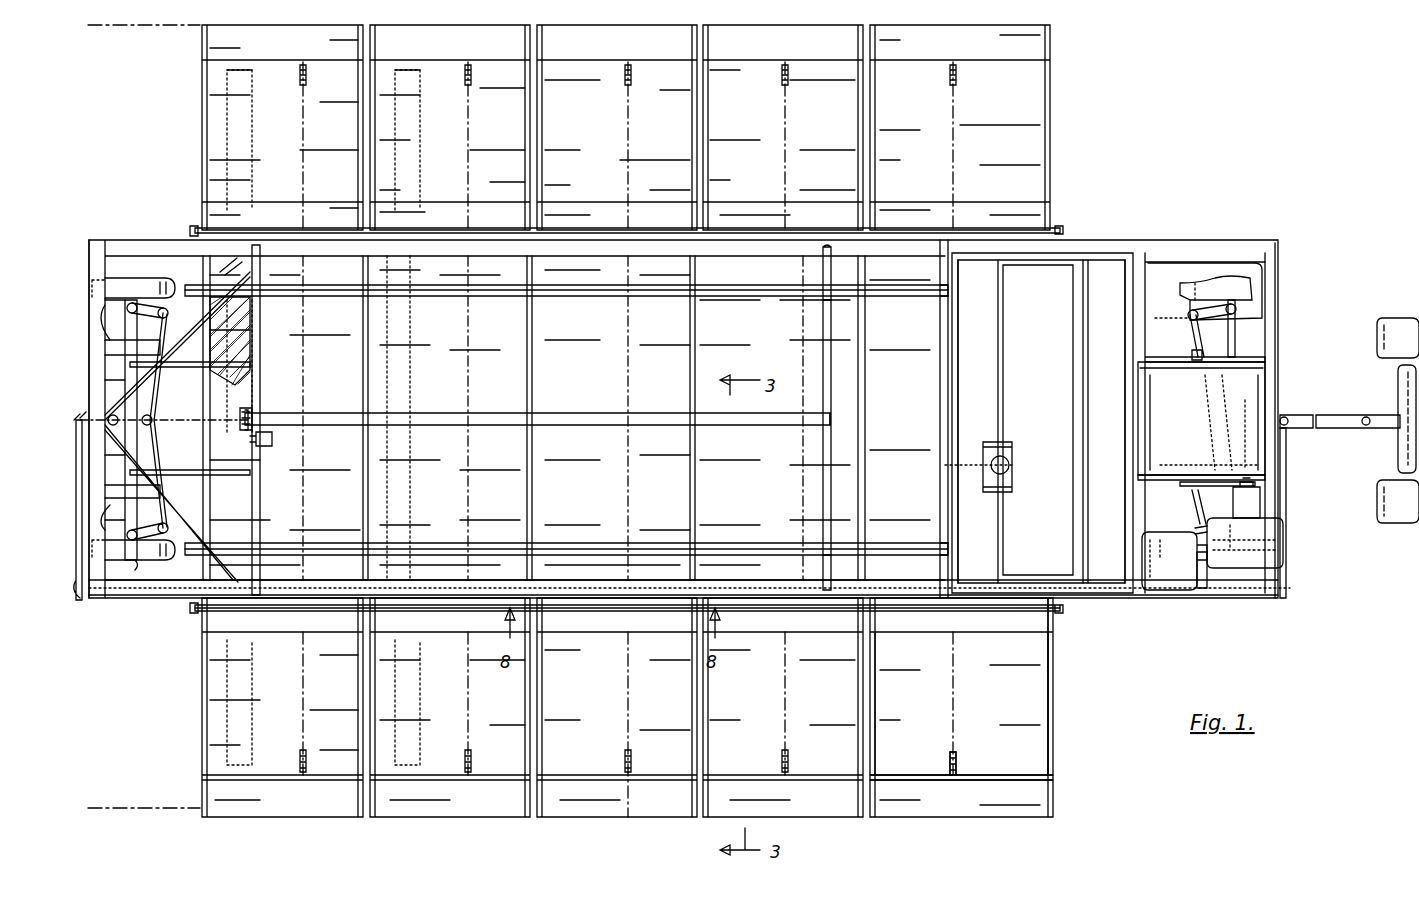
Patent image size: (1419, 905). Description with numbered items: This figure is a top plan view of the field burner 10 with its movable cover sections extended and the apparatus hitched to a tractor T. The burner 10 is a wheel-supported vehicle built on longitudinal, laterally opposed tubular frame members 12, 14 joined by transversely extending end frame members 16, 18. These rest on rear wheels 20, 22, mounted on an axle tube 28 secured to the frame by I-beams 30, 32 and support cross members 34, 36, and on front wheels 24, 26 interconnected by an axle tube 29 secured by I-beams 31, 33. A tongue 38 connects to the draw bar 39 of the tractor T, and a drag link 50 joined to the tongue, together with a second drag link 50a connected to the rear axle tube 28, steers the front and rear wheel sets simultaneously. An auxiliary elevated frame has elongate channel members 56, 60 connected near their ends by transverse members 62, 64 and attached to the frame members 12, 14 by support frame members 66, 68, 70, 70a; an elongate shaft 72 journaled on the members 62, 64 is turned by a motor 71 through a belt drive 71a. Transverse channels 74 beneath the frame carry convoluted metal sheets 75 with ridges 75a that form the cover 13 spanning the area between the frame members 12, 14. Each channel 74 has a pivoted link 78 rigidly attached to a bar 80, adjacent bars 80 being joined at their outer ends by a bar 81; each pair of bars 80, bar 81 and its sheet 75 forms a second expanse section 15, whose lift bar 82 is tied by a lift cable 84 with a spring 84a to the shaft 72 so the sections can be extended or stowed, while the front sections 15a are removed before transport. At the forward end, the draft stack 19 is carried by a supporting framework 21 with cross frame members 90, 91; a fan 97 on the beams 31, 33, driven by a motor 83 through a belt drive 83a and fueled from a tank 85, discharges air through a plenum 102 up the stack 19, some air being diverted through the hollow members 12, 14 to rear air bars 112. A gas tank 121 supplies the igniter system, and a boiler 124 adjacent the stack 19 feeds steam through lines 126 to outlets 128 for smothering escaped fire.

The field burner 10 is at (1175, 145).
The frame member 12 is at (1195, 252).
The cover 13 is at (812, 462).
The frame member 14 is at (1252, 598).
The second expanse section 15 is at (532, 421).
The front section 15a is at (1001, 699).
The end frame member 16 is at (1272, 342).
The end frame member 18 is at (80, 250).
The draft stack 19 is at (1010, 332).
The rear wheel 20 is at (158, 278).
The supporting framework 21 is at (1132, 342).
The rear wheel 22 is at (128, 585).
The front wheel 24 is at (1252, 282).
The front wheel 26 is at (1204, 588).
The axle tube 28 is at (114, 300).
The axle tube 29 is at (1228, 342).
The I-beam 30 is at (152, 344).
The I-beam 31 is at (1165, 365).
The I-beam 32 is at (150, 485).
The I-beam 33 is at (1165, 480).
The support cross member 34 is at (150, 372).
The support cross member 36 is at (150, 462).
The tongue 38 is at (1290, 410).
The draw bar 39 is at (1336, 415).
The drag link 50 is at (1284, 475).
The drag link 50a is at (80, 585).
The channel member 56 is at (750, 292).
The channel member 60 is at (738, 520).
The transverse member 62 is at (826, 392).
The transverse member 64 is at (256, 345).
The support frame member 66 is at (258, 272).
The support frame member 68 is at (258, 566).
The support frame member 70 is at (828, 258).
The support frame member 70a is at (820, 574).
The motor 71 is at (276, 435).
The belt drive 71a is at (240, 432).
The shaft 72 is at (320, 426).
The channel 74 is at (862, 498).
The convoluted metal sheet 75 is at (1042, 742).
The ridge 75a is at (886, 458).
The link 78 is at (1040, 624).
The bar 80 is at (1044, 722).
The bar 81 is at (938, 810).
The lift bar 82 is at (1022, 782).
The drive motor 83 is at (1262, 520).
The belt drive 83a is at (1210, 484).
The lift cable 84 is at (940, 660).
The spring 84a is at (956, 762).
The fuel tank 85 is at (1182, 592).
The cross frame member 90 is at (1128, 448).
The cross frame member 91 is at (1106, 612).
The fan 97 is at (1148, 405).
The plenum 102 is at (1106, 256).
The air bar 112 is at (417, 100).
The tank 121 is at (1212, 268).
The boiler 124 is at (995, 440).
The line 126 is at (940, 532).
The outlet 128 is at (1062, 610).
The tractor T is at (1400, 378).